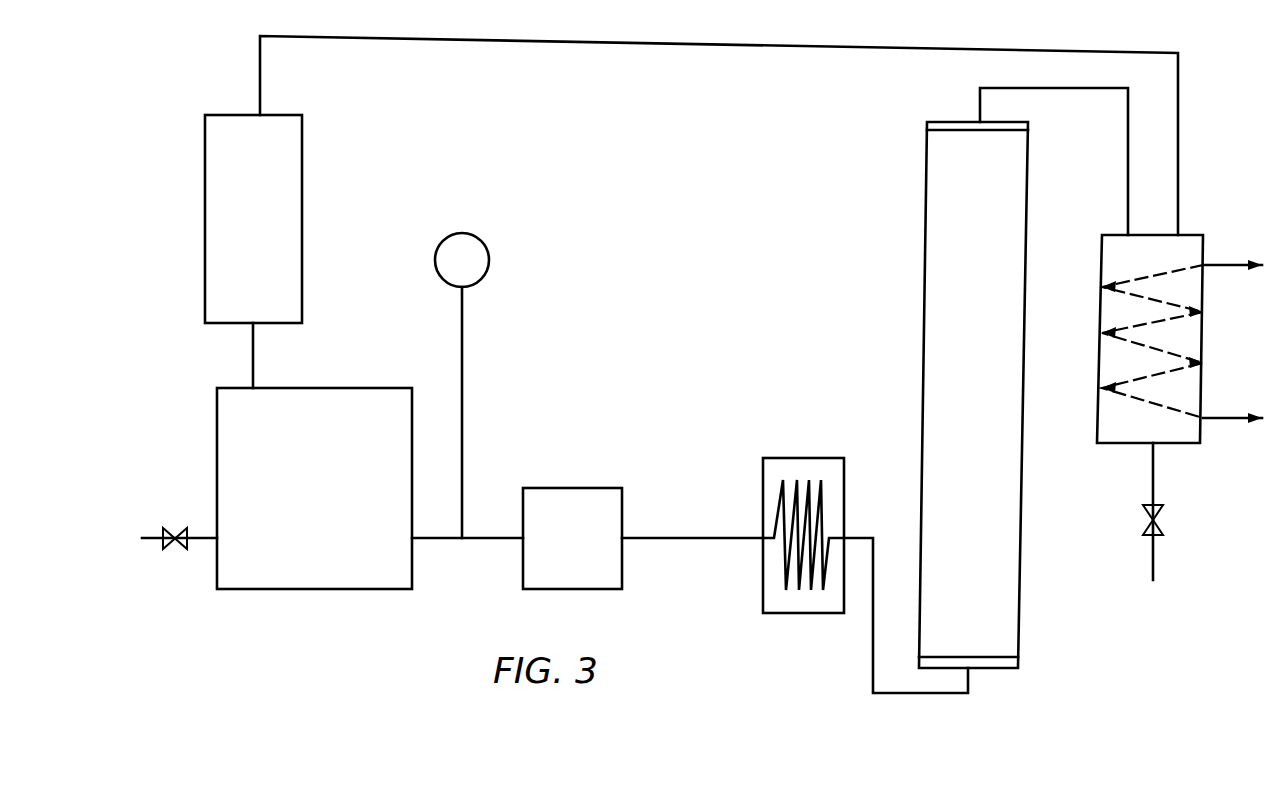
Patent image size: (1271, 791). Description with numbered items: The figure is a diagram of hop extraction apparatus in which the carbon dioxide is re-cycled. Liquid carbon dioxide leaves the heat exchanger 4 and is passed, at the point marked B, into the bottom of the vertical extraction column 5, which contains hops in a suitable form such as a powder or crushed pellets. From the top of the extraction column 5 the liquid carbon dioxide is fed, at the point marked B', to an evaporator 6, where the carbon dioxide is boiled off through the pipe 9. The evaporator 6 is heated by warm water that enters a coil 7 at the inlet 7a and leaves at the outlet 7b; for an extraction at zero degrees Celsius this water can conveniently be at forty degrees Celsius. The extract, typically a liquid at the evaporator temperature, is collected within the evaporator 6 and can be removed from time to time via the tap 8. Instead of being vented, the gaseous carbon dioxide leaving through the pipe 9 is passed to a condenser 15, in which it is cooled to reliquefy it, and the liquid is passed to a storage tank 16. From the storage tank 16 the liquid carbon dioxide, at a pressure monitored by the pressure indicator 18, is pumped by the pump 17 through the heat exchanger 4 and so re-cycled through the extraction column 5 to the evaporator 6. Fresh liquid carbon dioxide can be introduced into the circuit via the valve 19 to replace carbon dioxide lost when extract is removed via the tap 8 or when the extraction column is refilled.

The heat exchanger 4 is at (796, 456).
The extraction column 5 is at (973, 395).
The evaporator 6 is at (1100, 357).
The coil 7 is at (1180, 318).
The coil inlet 7a is at (1224, 415).
The coil outlet 7b is at (1232, 272).
The tap 8 is at (1163, 518).
The pipe 9 is at (1180, 170).
The condenser 15 is at (253, 251).
The storage tank 16 is at (370, 488).
The pump 17 is at (643, 538).
The pressure indicator 18 is at (489, 260).
The valve 19 is at (177, 524).
The stream B is at (896, 683).
The stream B' is at (1054, 161).